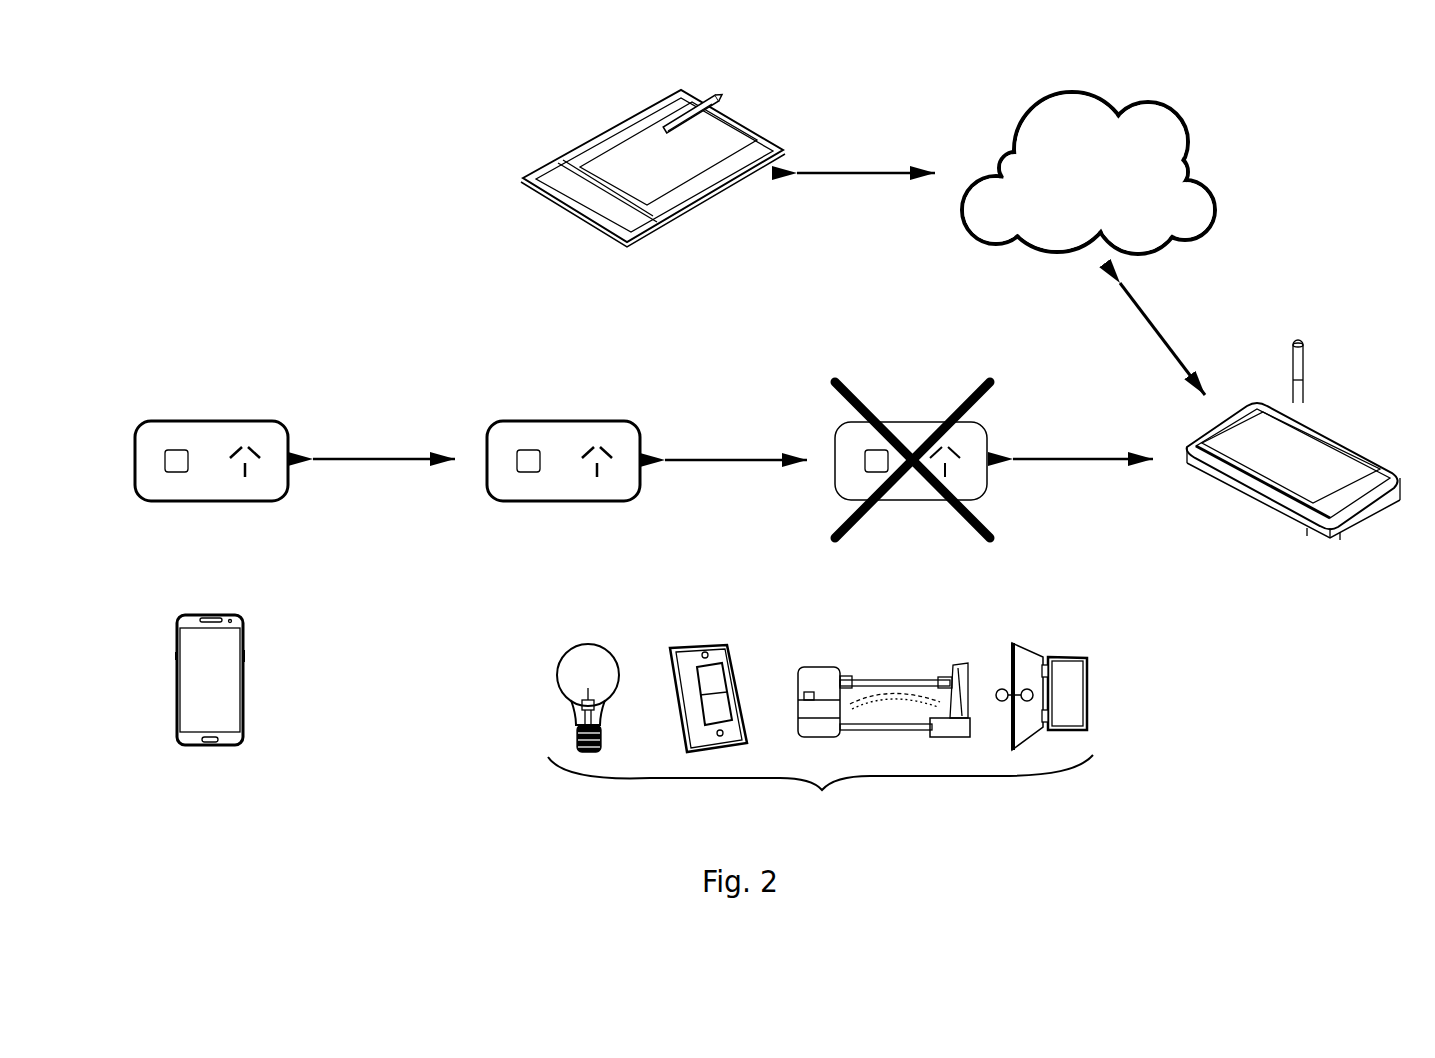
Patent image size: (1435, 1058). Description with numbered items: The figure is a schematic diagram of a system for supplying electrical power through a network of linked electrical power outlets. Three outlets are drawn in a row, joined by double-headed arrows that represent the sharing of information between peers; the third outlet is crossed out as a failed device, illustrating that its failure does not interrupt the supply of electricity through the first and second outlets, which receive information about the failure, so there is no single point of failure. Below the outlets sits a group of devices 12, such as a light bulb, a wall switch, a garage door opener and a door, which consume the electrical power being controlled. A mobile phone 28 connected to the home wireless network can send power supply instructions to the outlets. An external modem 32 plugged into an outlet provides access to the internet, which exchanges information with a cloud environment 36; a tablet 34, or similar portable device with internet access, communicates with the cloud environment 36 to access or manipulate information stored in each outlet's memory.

The devices 12 is at (820, 729).
The mobile phone 28 is at (248, 680).
The external modem 32 is at (1318, 418).
The tablet 34 is at (755, 122).
The cloud environment 36 is at (1195, 123).